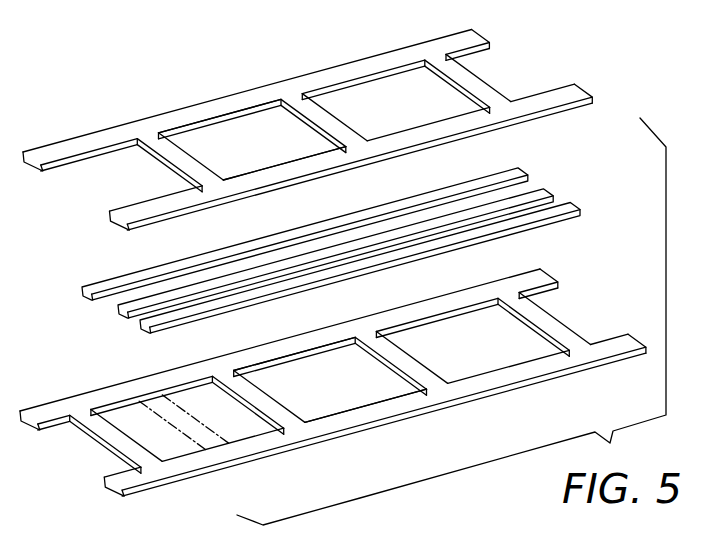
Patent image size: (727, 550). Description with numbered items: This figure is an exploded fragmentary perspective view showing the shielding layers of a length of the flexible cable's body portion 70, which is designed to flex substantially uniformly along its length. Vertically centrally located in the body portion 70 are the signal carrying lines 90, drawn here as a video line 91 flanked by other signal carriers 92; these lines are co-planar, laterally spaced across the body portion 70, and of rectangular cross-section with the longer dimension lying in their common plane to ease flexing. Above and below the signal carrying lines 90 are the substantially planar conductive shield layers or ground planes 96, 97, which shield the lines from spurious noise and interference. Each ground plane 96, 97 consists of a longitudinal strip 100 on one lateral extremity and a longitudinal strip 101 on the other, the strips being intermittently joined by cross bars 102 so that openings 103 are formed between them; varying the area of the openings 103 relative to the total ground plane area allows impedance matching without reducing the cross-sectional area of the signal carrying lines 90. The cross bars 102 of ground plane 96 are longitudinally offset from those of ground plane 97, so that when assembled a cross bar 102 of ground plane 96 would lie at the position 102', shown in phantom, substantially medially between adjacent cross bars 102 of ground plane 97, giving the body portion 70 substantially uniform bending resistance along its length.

The body portion 70 is at (543, 57).
The longitudinal strips 100 is at (312, 70).
The ground plane 96 is at (467, 35).
The longitudinal strips 101 is at (412, 133).
The cross bars 102 is at (311, 273).
The openings 103 is at (240, 138).
The signal carrying lines 90 is at (565, 163).
The signal carriers 92 is at (520, 173).
The video line 91 is at (547, 193).
The ground plane 97 is at (604, 350).
The offset cross bar position 102' is at (145, 396).